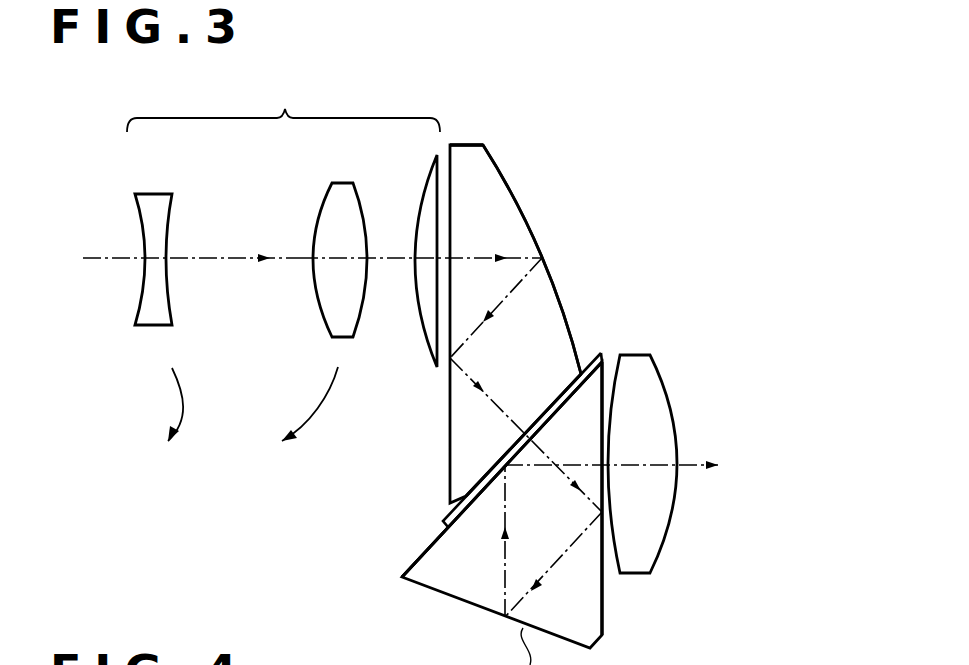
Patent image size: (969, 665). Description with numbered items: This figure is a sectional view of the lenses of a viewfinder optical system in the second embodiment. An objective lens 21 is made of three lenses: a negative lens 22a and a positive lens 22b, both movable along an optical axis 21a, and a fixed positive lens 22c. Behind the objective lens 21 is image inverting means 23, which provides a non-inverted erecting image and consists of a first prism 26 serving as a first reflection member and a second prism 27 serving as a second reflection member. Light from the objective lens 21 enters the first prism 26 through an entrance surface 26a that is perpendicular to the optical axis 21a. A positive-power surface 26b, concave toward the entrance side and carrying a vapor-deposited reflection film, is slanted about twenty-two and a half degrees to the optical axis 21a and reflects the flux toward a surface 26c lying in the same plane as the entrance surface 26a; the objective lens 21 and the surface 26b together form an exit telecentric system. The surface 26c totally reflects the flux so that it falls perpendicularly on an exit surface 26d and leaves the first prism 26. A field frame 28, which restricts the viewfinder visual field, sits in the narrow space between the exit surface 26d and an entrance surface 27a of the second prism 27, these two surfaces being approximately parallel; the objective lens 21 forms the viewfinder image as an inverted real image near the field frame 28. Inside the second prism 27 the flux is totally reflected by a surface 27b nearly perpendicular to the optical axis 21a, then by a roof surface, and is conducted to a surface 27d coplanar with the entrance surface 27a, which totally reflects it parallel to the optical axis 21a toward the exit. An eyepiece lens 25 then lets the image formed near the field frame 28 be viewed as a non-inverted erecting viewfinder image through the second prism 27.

The objective lens 21 is at (283, 101).
The optical axis 21a is at (103, 267).
The negative lens 22a is at (153, 193).
The positive lens 22b is at (322, 202).
The fixed positive lens 22c is at (417, 213).
The image inverting means 23 is at (515, 123).
The eyepiece lens 25 is at (653, 410).
The first prism 26 is at (473, 173).
The entrance surface 26a is at (455, 144).
The positive-power surface 26b is at (500, 163).
The surface 26c is at (452, 106).
The exit surface 26d is at (565, 378).
The second prism 27 is at (438, 557).
The entrance surface 27a is at (442, 527).
The surface 27b is at (603, 617).
The surface 27d is at (502, 469).
The field frame 28 is at (599, 352).